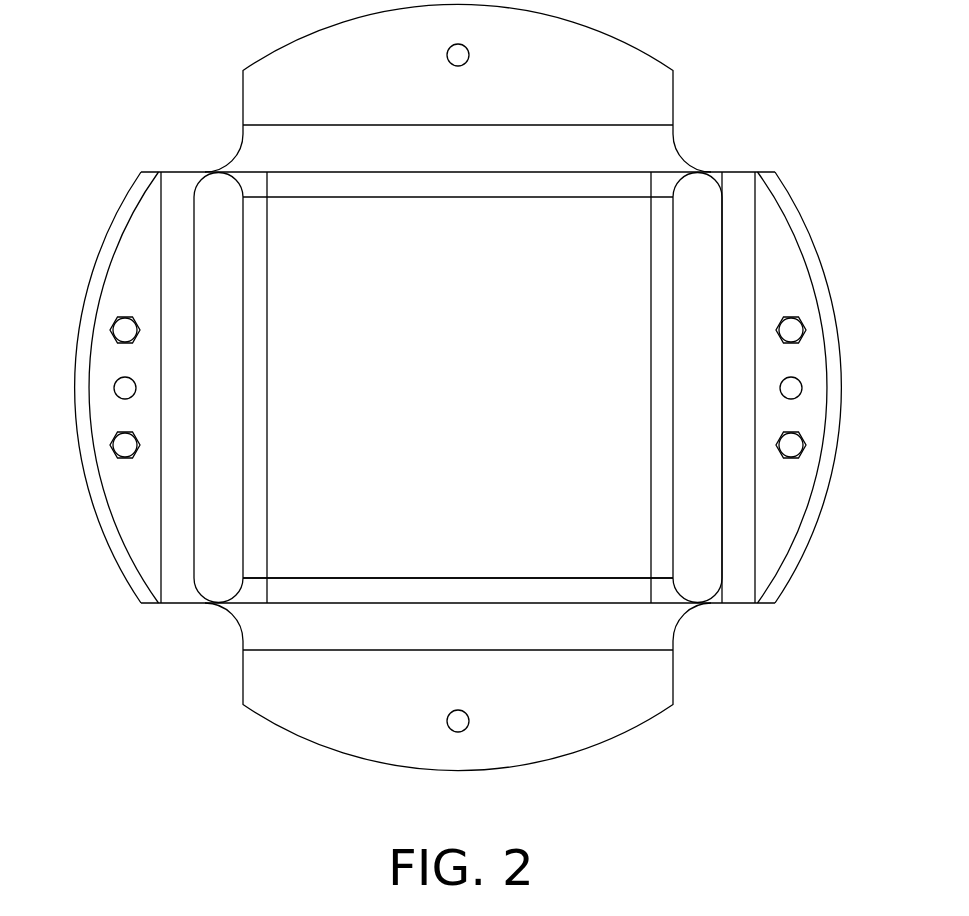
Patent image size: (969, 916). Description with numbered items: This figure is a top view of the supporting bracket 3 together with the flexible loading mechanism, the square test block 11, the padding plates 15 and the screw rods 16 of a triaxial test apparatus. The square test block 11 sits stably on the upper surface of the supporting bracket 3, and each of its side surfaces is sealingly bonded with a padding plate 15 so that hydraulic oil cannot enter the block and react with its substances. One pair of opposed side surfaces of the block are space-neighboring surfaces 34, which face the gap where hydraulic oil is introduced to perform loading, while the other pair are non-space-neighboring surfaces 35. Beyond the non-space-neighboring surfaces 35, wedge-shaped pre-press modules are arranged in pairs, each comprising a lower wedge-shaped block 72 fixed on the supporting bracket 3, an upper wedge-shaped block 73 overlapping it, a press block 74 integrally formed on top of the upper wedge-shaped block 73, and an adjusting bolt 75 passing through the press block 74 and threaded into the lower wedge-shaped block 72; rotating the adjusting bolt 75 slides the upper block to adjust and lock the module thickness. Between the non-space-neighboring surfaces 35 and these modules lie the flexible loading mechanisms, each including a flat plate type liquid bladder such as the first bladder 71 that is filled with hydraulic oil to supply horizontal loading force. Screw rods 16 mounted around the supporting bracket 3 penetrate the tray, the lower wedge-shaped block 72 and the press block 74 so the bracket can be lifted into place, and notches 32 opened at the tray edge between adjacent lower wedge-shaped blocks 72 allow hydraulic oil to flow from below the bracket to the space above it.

The supporting bracket 3 is at (680, 165).
The square test block 11 is at (282, 213).
The padding plate 15 is at (255, 445).
The screw rod 16 is at (788, 388).
The notch 32 is at (690, 622).
The space-neighboring surface 34 is at (290, 582).
The non-space-neighboring surface 35 is at (267, 258).
The first bladder 71 is at (208, 312).
The lower wedge-shaped block 72 is at (817, 503).
The upper wedge-shaped block 73 is at (734, 541).
The press block 74 is at (785, 258).
The adjusting bolt 75 is at (793, 447).